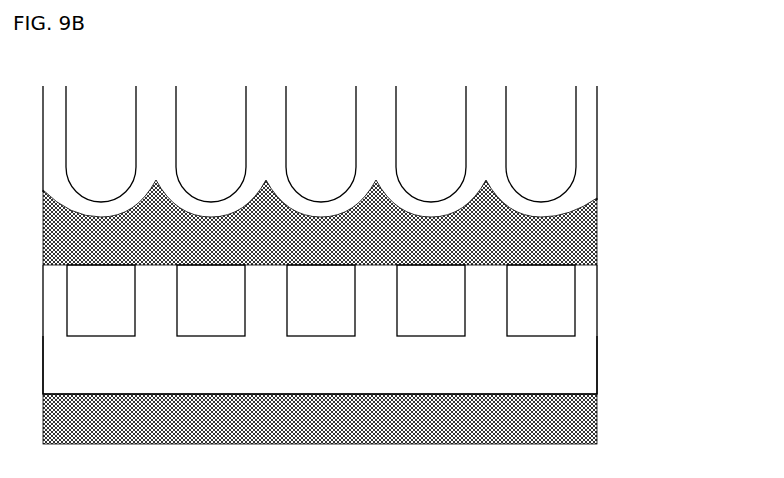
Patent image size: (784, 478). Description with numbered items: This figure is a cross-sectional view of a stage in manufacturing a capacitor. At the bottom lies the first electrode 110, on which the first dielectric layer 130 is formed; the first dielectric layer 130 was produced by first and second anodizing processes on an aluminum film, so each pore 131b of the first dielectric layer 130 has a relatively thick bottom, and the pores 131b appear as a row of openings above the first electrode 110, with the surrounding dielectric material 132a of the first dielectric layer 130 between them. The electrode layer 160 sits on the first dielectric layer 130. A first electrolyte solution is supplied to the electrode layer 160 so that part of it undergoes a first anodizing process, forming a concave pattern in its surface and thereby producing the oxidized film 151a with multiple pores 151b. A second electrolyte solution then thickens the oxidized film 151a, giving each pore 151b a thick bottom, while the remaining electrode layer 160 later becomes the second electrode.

The first electrode 110 is at (555, 422).
The first dielectric layer 130 is at (713, 287).
The pore 131b is at (525, 298).
The buffer layer 132a is at (582, 365).
The oxidized film 151a is at (583, 157).
The pore 151b is at (532, 117).
The electrode layer 160 is at (562, 240).